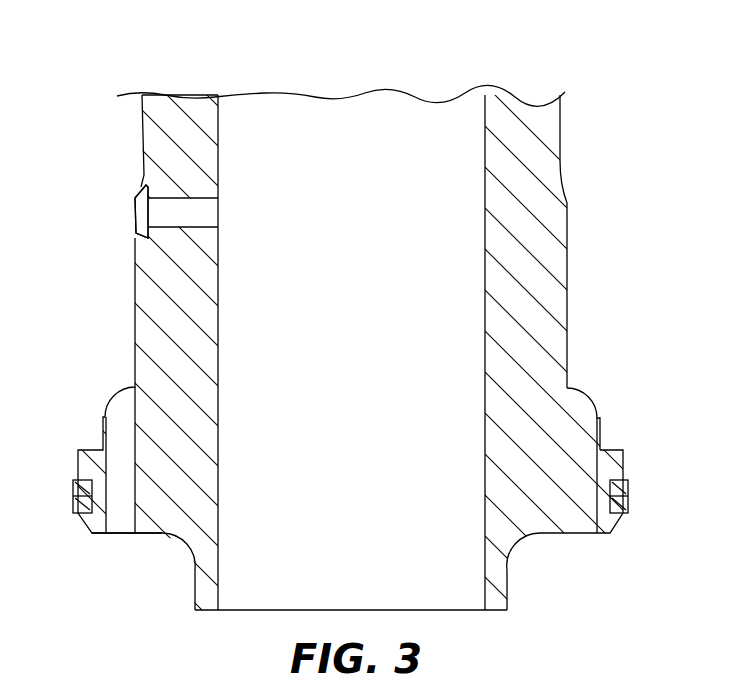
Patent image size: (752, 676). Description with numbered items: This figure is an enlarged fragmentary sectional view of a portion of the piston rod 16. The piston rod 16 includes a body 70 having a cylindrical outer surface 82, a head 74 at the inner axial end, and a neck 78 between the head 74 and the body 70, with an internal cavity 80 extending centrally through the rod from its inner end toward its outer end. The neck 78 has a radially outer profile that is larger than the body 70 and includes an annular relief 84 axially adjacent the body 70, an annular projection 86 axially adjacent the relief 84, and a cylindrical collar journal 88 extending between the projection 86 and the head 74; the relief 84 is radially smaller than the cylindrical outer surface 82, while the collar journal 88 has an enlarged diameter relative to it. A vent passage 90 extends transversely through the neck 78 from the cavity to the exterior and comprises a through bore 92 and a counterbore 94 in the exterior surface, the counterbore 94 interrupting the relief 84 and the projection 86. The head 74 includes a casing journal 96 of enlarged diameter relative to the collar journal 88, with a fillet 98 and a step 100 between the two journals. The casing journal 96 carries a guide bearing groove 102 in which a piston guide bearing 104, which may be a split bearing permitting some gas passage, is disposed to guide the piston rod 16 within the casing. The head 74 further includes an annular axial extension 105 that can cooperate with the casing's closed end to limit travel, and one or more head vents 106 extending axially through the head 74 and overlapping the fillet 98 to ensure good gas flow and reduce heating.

The piston rod 16 is at (131, 60).
The body 70 is at (177, 117).
The internal cavity 80 is at (428, 149).
The cylindrical outer surface 82 is at (138, 112).
The neck 78 is at (180, 298).
The vent passage 90 is at (122, 195).
The counterbore 94 is at (140, 240).
The through bore 92 is at (200, 210).
The annular relief 84 is at (562, 173).
The annular projection 86 is at (568, 207).
The collar journal 88 is at (570, 300).
The fillet 98 is at (582, 407).
The step 100 is at (604, 442).
The casing journal 96 is at (623, 465).
The guide bearing groove 102 is at (78, 498).
The piston guide bearing 104 is at (78, 490).
The head 74 is at (167, 505).
The annular axial extension 105 is at (203, 582).
The head vent 106 is at (585, 520).